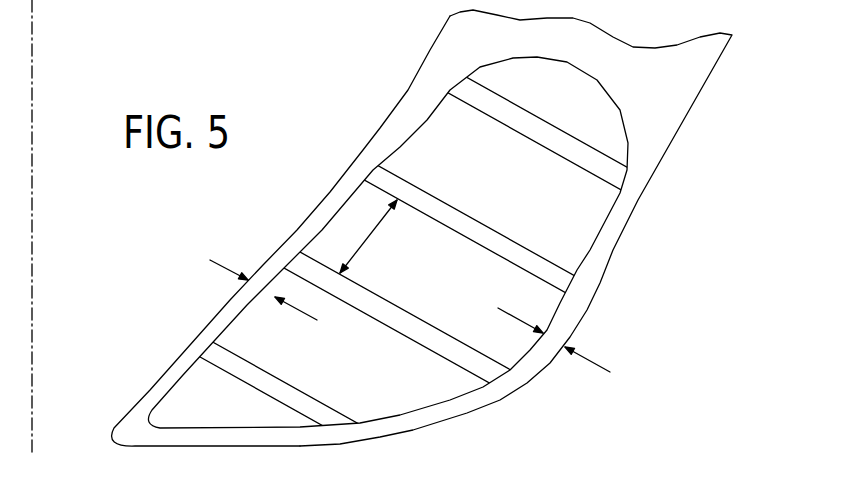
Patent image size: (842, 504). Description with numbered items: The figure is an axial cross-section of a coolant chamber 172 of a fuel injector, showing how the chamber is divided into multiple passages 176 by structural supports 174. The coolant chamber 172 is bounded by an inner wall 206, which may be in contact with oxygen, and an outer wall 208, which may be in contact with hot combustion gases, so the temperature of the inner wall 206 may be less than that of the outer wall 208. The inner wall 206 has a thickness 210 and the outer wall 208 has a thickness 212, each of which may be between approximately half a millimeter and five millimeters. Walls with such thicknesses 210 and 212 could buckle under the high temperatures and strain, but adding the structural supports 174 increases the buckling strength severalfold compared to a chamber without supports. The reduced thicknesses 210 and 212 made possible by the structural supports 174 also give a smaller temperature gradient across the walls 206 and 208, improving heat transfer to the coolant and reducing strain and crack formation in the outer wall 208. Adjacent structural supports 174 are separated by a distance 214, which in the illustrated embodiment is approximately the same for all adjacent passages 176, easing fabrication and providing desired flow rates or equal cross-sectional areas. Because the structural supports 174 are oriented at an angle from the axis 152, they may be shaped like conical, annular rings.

The axis 152 is at (32, 78).
The coolant chamber 172 is at (287, 118).
The structural supports 174 is at (238, 367).
The passages 176 is at (192, 402).
The inner wall 206 is at (335, 187).
The outer wall 208 is at (593, 290).
The thickness of the inner wall 210 is at (235, 272).
The thickness of the outer wall 212 is at (588, 358).
The separation distance 214 is at (366, 237).